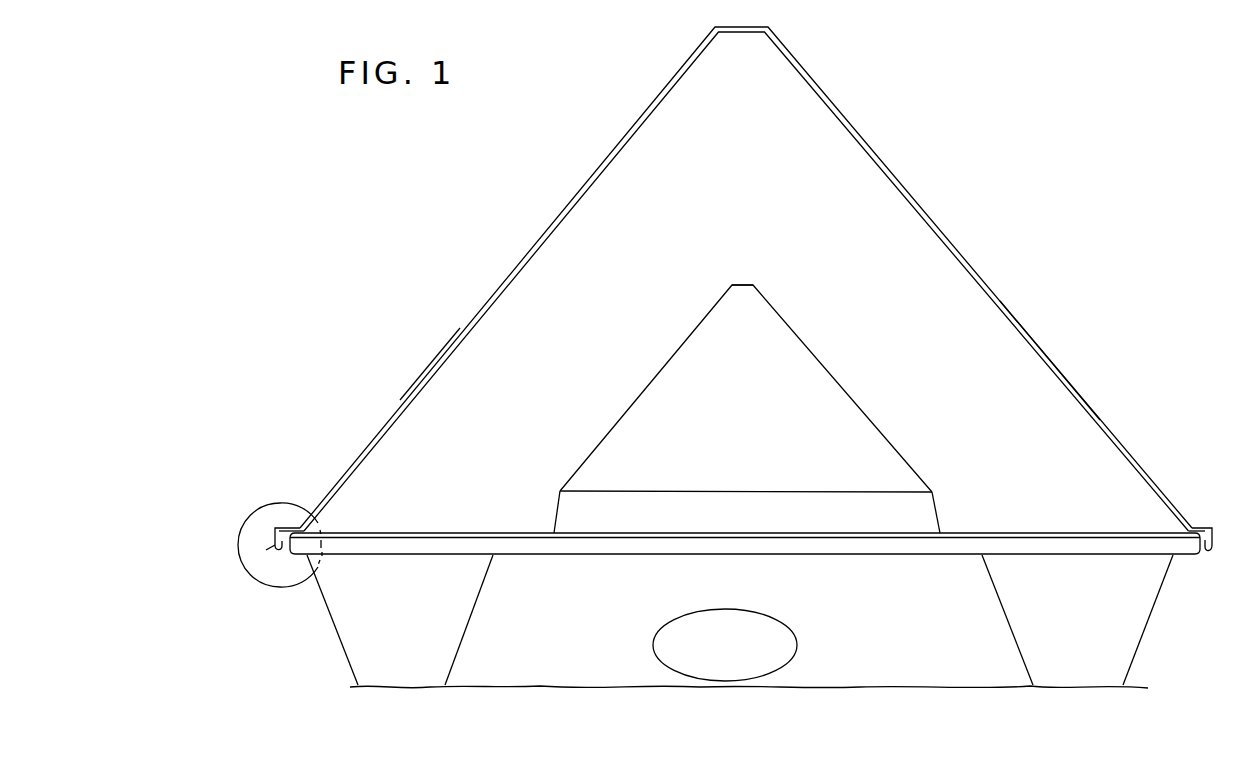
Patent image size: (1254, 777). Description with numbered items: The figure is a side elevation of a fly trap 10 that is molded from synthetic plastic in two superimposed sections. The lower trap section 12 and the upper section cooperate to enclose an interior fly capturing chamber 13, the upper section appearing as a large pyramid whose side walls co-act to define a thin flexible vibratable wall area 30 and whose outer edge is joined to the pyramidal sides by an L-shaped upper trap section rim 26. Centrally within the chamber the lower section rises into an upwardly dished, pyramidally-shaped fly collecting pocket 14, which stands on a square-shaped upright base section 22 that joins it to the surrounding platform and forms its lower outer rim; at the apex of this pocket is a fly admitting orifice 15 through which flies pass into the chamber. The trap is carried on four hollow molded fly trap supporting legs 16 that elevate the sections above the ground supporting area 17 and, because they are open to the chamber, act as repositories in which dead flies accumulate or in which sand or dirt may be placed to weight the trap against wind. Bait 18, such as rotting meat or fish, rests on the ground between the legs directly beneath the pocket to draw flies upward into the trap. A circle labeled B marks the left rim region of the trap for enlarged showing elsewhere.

The fly trap 10 is at (958, 249).
The lower trap section 12 is at (1172, 499).
The interior fly capturing chamber 13 is at (887, 231).
The fly collecting pocket 14 is at (864, 411).
The fly admitting orifice 15 is at (750, 285).
The fly trap supporting legs 16 is at (465, 611).
The ground supporting area 17 is at (537, 677).
The bait 18 is at (786, 644).
The upright base section 22 is at (938, 499).
The upper trap section rim 26 is at (1041, 343).
The thin flexible vibratable wall area 30 is at (429, 364).
The detail area B is at (252, 580).